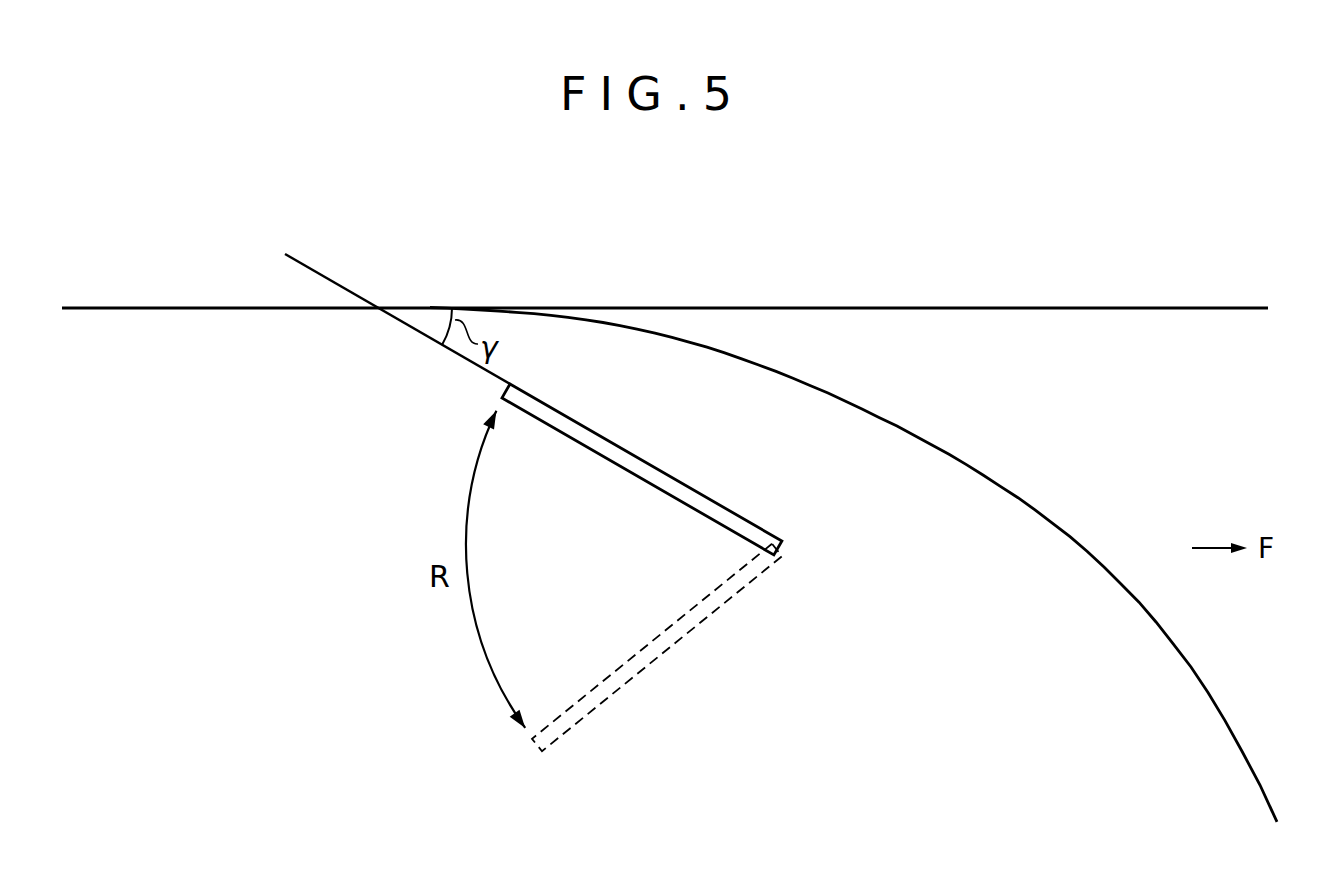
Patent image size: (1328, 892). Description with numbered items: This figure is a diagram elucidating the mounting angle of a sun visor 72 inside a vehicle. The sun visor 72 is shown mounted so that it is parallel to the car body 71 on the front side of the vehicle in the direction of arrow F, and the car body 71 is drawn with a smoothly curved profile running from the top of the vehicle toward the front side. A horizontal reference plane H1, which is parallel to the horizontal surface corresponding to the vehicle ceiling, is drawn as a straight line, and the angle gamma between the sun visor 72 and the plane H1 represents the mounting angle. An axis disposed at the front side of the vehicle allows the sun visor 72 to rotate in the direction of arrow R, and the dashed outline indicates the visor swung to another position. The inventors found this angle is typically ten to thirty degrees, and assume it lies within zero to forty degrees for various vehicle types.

The car body 71 is at (1213, 697).
The sun visor 72 is at (650, 467).
The plane H1 is at (1143, 309).